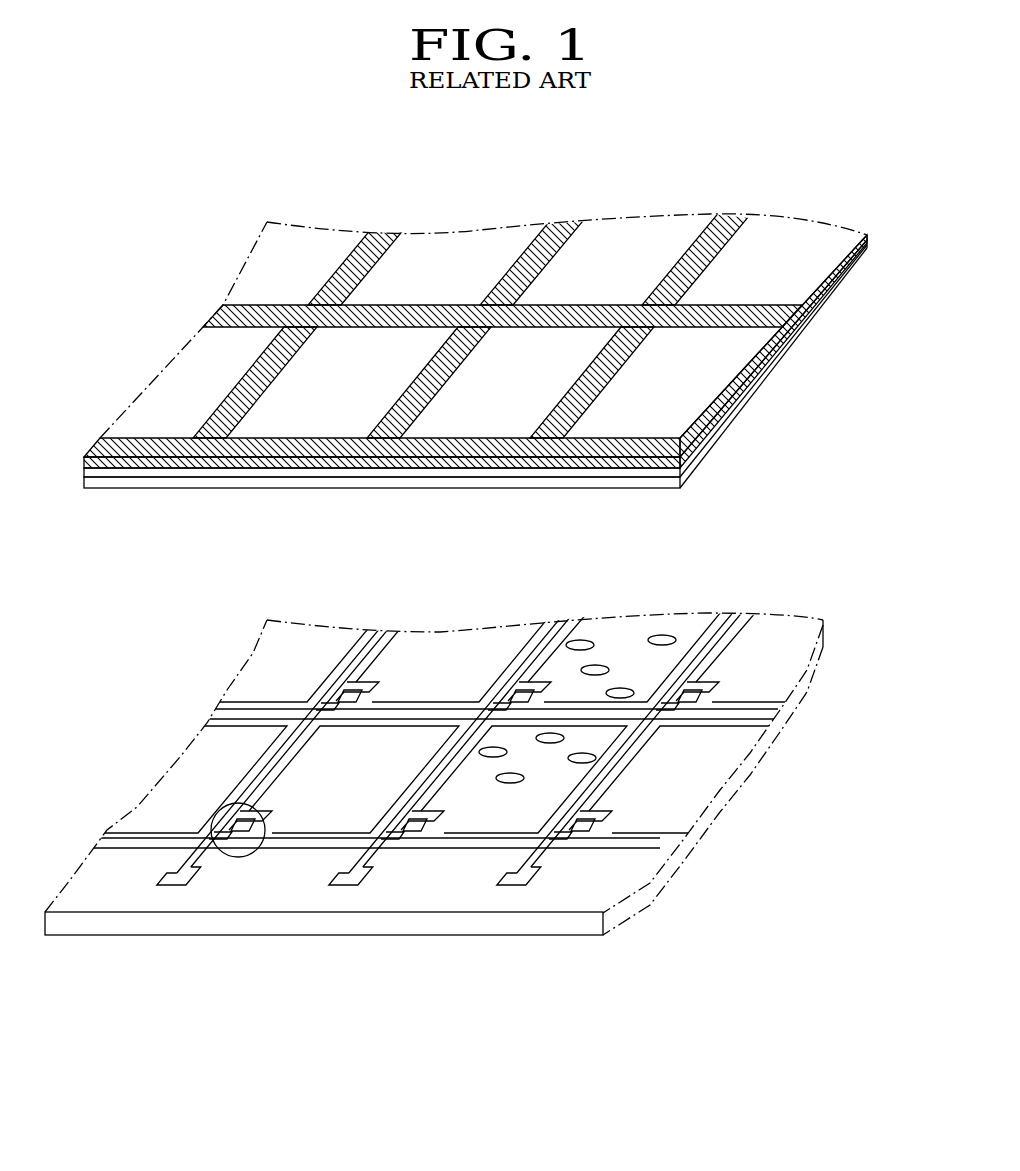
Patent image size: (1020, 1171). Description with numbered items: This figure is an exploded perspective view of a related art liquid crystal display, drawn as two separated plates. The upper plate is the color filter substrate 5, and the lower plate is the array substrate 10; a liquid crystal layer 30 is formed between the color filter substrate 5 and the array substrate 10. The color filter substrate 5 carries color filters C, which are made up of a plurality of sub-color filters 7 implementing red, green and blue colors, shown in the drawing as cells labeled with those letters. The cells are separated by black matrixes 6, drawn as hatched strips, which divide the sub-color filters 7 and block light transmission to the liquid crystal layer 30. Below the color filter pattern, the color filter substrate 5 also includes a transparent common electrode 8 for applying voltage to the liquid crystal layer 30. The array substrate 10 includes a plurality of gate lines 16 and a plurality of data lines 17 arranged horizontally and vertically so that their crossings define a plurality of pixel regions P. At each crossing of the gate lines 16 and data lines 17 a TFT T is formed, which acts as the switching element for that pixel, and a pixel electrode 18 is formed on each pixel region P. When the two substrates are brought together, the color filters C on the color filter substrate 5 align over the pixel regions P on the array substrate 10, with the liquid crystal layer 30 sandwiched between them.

The color filter substrate 5 is at (655, 473).
The black matrixes 6 is at (668, 448).
The sub-color filters 7 is at (730, 362).
The transparent common electrode 8 is at (640, 483).
The array substrate 10 is at (428, 922).
The gate lines 16 is at (490, 847).
The data lines 17 is at (368, 863).
The pixel electrodes 18 is at (595, 803).
The liquid crystal layer 30 is at (597, 668).
The color filters C is at (160, 330).
The pixel regions P is at (660, 783).
The TFTs T is at (243, 866).